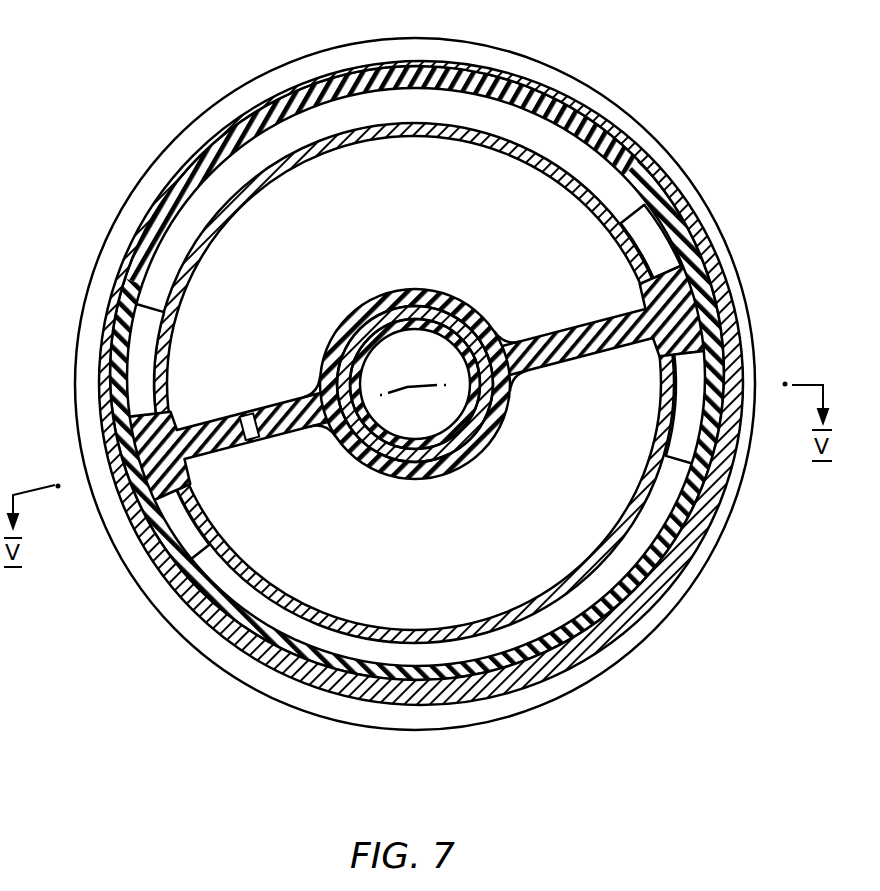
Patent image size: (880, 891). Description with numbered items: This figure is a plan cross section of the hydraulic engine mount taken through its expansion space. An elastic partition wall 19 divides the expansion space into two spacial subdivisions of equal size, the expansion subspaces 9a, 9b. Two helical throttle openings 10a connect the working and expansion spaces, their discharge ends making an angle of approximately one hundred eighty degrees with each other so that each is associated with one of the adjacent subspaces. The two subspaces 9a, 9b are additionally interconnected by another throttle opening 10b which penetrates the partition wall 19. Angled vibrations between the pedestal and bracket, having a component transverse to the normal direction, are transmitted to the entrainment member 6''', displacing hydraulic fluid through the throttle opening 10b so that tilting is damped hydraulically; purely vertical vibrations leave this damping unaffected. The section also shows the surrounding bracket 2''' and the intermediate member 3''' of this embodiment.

The expansion subspace 9a is at (545, 570).
The expansion subspace 9b is at (386, 155).
The elastic partition wall 19 is at (538, 345).
The throttle opening 10a is at (162, 383).
The throttle opening 10b is at (252, 436).
The rim cover 3''' is at (382, 383).
The steering wheel rim 2''' is at (415, 417).
The hub 6''' is at (415, 369).